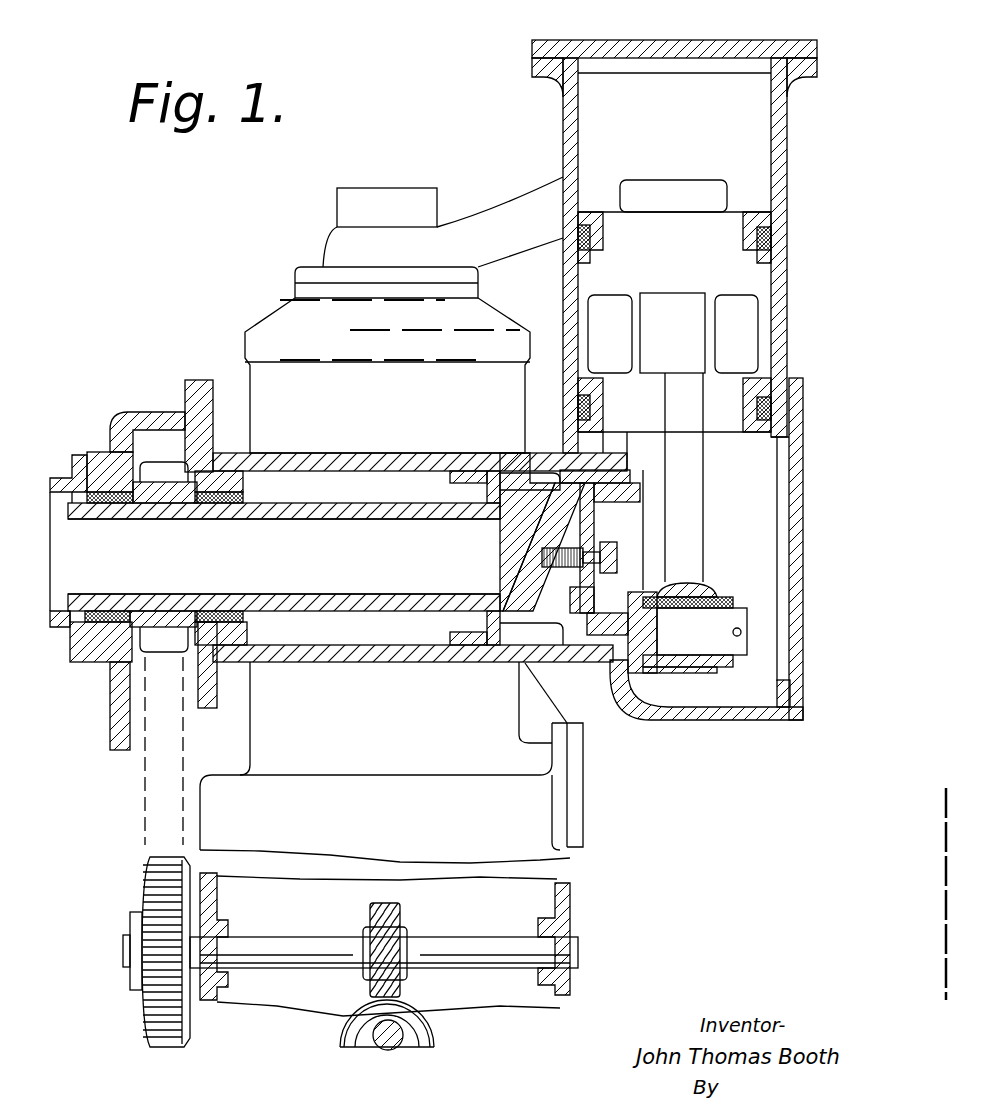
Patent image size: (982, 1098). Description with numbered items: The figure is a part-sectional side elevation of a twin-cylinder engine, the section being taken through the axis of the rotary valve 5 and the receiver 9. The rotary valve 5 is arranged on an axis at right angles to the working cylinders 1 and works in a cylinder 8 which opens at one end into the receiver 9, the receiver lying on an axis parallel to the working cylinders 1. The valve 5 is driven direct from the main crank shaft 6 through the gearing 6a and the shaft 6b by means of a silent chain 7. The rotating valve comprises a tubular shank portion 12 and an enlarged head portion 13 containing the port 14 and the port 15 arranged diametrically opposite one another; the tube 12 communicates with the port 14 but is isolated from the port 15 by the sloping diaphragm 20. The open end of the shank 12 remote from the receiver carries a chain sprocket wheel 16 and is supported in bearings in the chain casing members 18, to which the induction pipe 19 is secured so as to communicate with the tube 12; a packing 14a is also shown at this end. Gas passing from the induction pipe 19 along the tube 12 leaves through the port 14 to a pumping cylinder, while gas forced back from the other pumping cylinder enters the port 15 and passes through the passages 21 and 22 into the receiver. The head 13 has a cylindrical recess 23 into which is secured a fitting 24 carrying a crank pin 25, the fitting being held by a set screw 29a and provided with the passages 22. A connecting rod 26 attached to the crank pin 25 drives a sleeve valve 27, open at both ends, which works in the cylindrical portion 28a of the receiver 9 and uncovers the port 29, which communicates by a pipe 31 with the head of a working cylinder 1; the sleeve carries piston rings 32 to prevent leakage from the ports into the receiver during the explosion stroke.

The working cylinder 1 is at (328, 388).
The rotary valve 5 is at (377, 468).
The main crank shaft 6 is at (377, 1040).
The gearing 6a is at (402, 915).
The shaft 6b is at (291, 952).
The silent chain 7 is at (147, 811).
The cylinder 8 is at (334, 648).
The receiver 9 is at (760, 657).
The tubular shank portion 12 is at (332, 604).
The enlarged head portion 13 is at (472, 470).
The port 14 is at (212, 506).
The packing ring 14a is at (118, 506).
The port 15 is at (517, 632).
The chain sprocket wheel 16 is at (175, 657).
The chain casing member 18 is at (162, 410).
The induction pipe 19 is at (57, 627).
The sloping diaphragm 20 is at (284, 556).
The passage 21 is at (567, 600).
The passage 22 is at (598, 590).
The cylindrical recess 23 is at (627, 470).
The fitting 24 is at (627, 527).
The crank pin 25 is at (672, 676).
The connecting rod 26 is at (682, 418).
The sleeve valve 27 is at (733, 225).
The cylindrical portion 28a is at (783, 127).
The port 29 is at (657, 196).
The set screw 29a is at (556, 532).
The pipe 31 is at (525, 218).
The piston ring 32 is at (742, 238).